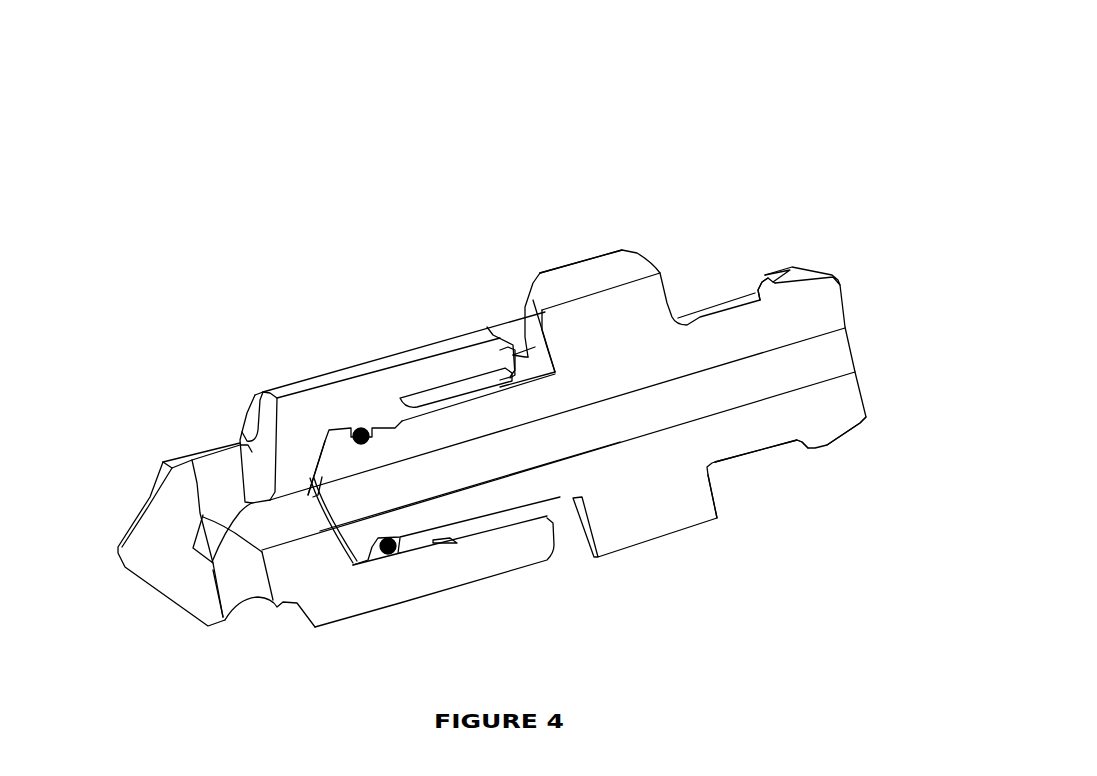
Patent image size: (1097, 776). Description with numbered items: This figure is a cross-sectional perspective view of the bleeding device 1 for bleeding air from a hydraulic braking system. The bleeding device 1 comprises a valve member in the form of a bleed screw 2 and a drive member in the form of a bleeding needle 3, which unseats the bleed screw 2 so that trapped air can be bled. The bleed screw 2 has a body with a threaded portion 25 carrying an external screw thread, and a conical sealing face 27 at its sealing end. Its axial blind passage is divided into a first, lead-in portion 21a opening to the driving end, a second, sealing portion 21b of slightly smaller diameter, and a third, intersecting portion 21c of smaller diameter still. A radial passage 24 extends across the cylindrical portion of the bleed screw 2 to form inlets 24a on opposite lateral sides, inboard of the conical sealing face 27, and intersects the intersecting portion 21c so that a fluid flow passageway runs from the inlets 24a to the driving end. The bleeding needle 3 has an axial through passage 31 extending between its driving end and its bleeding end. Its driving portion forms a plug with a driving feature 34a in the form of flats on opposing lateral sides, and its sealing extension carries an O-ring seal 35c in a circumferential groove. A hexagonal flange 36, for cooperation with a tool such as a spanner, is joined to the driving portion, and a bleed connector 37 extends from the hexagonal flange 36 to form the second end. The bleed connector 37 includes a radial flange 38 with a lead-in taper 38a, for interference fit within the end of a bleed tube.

The bleeding device 1 is at (692, 118).
The bleed screw 2 is at (182, 291).
The bleeding needle 3 is at (727, 573).
The first, lead-in portion 21a is at (458, 390).
The second, sealing portion 21b is at (387, 415).
The third, intersecting portion 21c is at (287, 545).
The radial passage 24 is at (213, 578).
The inlets 24a is at (212, 450).
The threaded portion 25 is at (465, 580).
The conical sealing face 27 is at (145, 500).
The axial through passage 31 is at (620, 442).
The driving feature 34a is at (525, 357).
The O-ring seal 35c is at (361, 428).
The hexagonal flange 36 is at (582, 270).
The bleed connector 37 is at (723, 307).
The radial flange 38 is at (823, 443).
The lead-in taper 38a is at (848, 430).